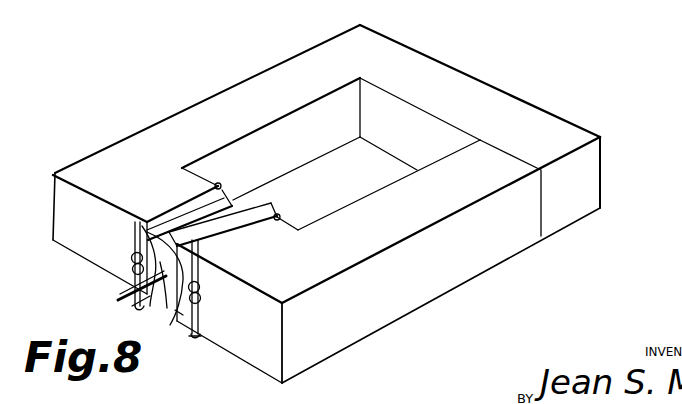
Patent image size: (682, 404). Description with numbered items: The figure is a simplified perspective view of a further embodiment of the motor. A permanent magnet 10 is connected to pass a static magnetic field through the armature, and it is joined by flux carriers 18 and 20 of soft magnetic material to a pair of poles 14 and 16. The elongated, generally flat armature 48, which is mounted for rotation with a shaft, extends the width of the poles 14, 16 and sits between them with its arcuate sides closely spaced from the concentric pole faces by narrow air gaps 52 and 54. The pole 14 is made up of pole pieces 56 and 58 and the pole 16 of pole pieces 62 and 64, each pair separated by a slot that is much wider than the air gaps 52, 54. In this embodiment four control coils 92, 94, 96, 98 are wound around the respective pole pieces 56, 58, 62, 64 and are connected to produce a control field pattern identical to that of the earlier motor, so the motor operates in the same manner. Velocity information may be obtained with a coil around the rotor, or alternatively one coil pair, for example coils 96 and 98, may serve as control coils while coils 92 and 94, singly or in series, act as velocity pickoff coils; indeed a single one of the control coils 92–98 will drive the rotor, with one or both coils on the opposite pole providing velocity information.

The permanent magnet 10 is at (468, 92).
The pole 14 is at (140, 308).
The pole 16 is at (200, 352).
The flux carrier 18 is at (227, 88).
The flux carrier 20 is at (480, 273).
The armature 48 is at (170, 295).
The air gap 52 is at (189, 215).
The air gap 54 is at (172, 306).
The pole piece 56 is at (147, 223).
The pole piece 58 is at (152, 302).
The pole piece 62 is at (223, 224).
The pole piece 64 is at (183, 325).
The control coil 92 is at (186, 195).
The control coil 94 is at (122, 290).
The control coil 96 is at (274, 217).
The control coil 98 is at (200, 321).